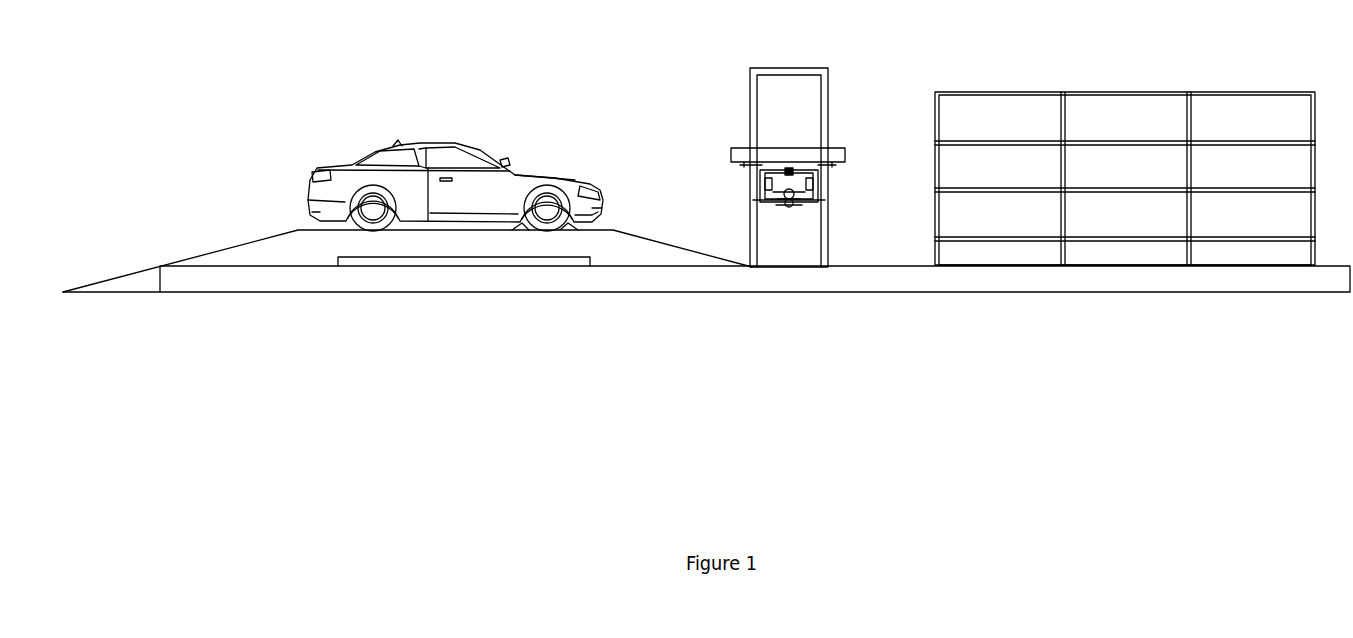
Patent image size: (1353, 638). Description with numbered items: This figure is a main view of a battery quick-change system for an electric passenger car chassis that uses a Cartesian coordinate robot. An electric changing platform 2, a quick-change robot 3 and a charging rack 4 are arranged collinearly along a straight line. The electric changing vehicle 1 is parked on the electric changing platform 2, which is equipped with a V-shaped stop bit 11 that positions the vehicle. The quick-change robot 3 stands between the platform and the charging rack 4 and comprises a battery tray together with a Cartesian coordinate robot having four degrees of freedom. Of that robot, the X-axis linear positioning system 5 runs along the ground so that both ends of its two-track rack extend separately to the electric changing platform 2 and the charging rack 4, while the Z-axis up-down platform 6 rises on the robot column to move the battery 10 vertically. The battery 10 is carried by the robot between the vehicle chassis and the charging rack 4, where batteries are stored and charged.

The electric changing vehicle 1 is at (463, 163).
The electric changing platform 2 is at (313, 242).
The quick-change robot 3 is at (790, 238).
The charging rack 4 is at (1129, 241).
The X-axis linear positioning system 5 is at (1327, 274).
The Z-axis up-down platform 6 is at (754, 199).
The battery 10 is at (782, 155).
The V-shaped stop bit 11 is at (567, 228).